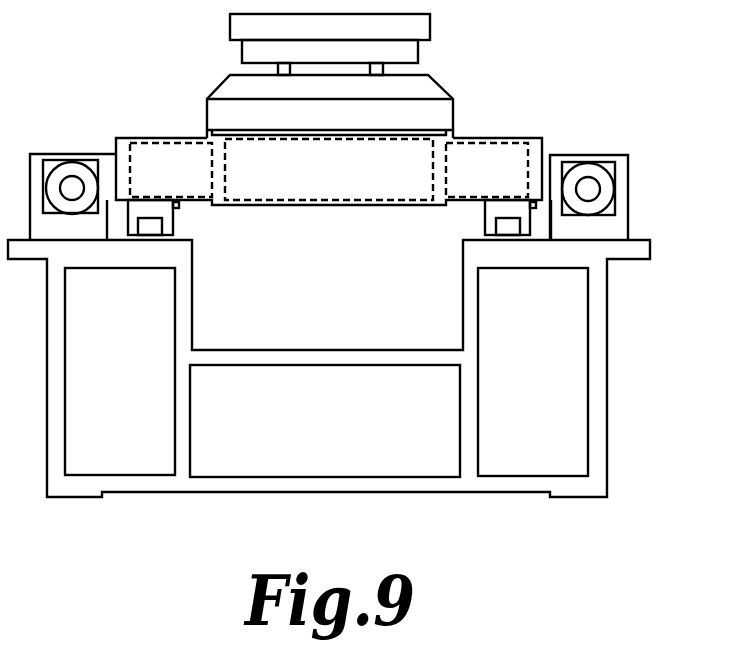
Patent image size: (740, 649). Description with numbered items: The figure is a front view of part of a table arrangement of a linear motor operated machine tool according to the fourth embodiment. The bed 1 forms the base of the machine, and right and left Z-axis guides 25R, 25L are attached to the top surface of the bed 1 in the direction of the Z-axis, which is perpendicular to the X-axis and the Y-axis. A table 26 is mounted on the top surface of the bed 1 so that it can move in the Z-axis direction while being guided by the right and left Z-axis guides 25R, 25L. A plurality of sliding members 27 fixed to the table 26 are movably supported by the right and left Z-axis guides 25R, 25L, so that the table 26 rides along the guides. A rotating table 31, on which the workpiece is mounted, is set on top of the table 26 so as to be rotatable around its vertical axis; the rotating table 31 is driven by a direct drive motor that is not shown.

The bed 1 is at (598, 375).
The left Z-axis guide 25L is at (150, 232).
The right Z-axis guide 25R is at (502, 232).
The table 26 is at (163, 148).
The sliding members 27 is at (168, 217).
The rotating table 31 is at (438, 92).